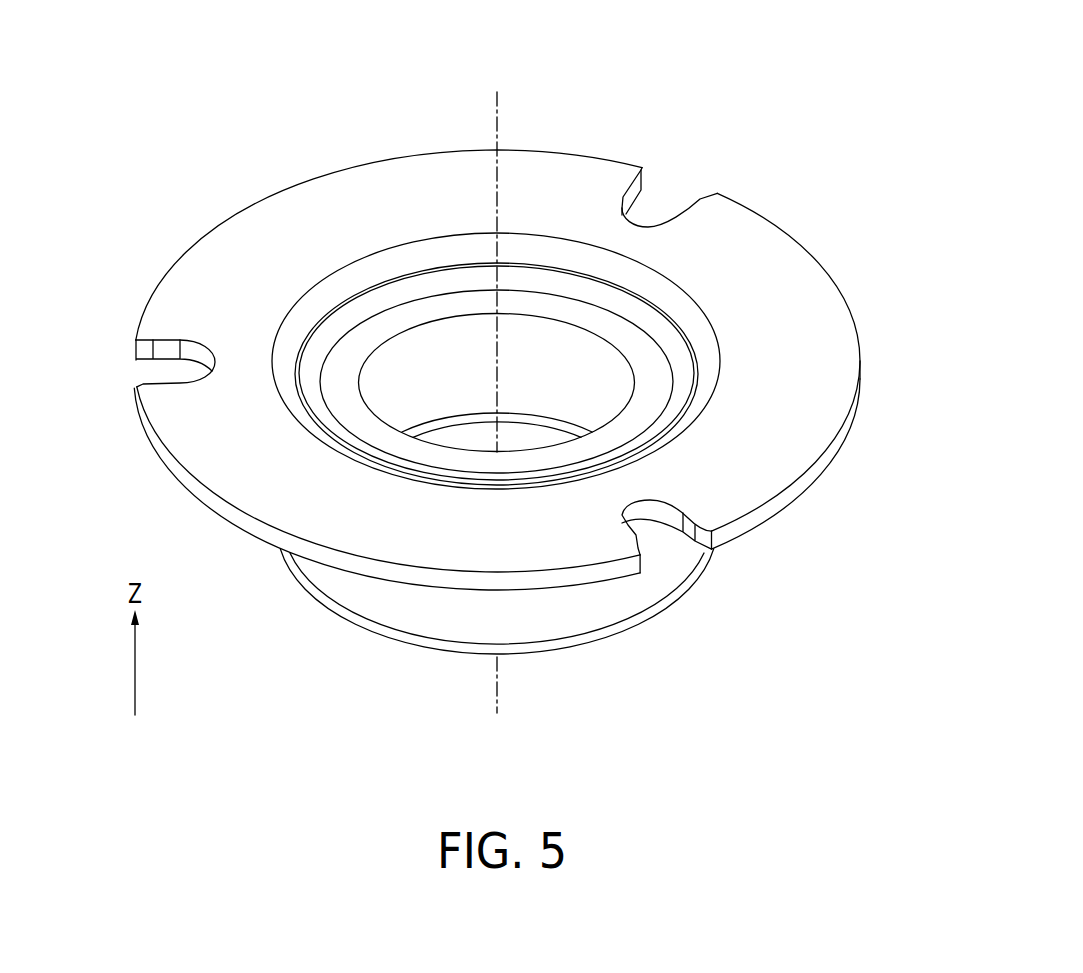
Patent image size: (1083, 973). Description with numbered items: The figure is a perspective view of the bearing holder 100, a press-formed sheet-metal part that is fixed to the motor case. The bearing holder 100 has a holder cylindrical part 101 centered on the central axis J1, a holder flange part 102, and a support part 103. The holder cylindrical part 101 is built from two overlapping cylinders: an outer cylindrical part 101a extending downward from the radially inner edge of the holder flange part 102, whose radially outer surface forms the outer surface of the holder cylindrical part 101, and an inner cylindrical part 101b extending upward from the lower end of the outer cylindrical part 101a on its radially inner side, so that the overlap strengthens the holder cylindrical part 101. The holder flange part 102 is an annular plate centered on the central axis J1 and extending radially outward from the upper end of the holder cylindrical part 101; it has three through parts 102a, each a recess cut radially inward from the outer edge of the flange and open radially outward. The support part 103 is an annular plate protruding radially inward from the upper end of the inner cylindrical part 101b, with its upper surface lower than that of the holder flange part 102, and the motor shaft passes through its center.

The bearing holder 100 is at (703, 97).
The holder cylindrical part 101 is at (653, 717).
The outer cylindrical part 101a is at (603, 605).
The inner cylindrical part 101b is at (477, 479).
The holder flange part 102 is at (787, 451).
The through part 102a is at (165, 350).
The support part 103 is at (375, 425).
The central axis J1 is at (497, 103).